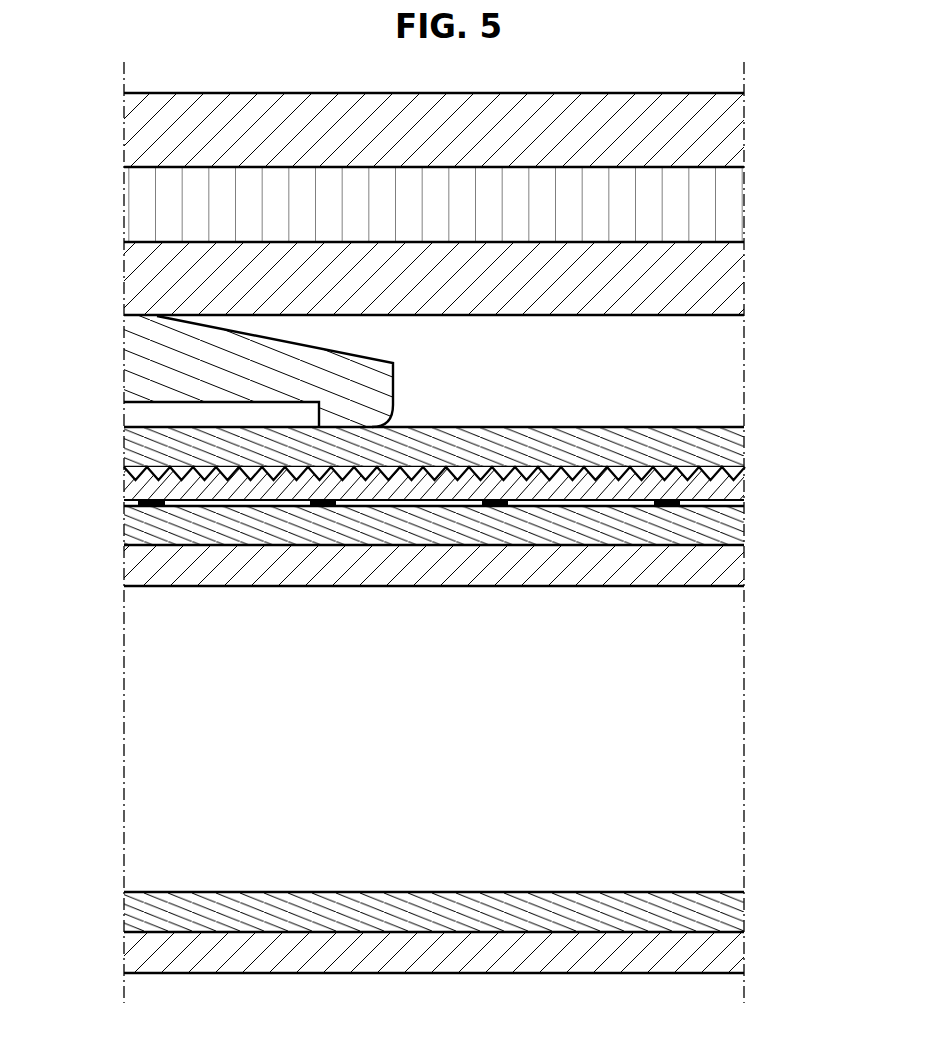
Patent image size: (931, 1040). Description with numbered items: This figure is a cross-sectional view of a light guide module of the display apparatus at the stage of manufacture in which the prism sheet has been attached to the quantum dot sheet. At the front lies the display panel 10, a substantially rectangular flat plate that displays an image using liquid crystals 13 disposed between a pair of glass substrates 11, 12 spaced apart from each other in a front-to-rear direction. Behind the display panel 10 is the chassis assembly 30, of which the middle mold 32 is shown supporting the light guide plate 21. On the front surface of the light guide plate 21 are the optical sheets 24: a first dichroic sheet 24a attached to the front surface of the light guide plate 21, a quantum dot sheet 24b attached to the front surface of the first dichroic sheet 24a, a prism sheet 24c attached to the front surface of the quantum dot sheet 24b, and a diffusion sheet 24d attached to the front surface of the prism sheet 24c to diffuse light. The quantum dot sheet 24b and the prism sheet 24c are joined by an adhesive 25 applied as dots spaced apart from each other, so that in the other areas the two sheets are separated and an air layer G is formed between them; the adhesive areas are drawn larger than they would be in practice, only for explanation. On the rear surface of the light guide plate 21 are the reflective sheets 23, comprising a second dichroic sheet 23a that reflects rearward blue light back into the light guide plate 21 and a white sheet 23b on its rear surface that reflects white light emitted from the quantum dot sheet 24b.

The display panel 10 is at (492, 204).
The glass substrate 11 is at (733, 140).
The glass substrate 12 is at (472, 278).
The liquid crystals 13 is at (726, 207).
The light guide plate 21 is at (728, 750).
The reflective sheets 23 is at (502, 935).
The second dichroic sheet 23a is at (730, 957).
The white sheet 23b is at (730, 914).
The optical sheets 24 is at (468, 508).
The first dichroic sheet 24a is at (478, 567).
The quantum dot sheet 24b is at (727, 526).
The prism sheet 24c is at (727, 491).
The diffusion sheet 24d is at (727, 447).
The adhesive 25 is at (328, 507).
The chassis assembly 30 is at (204, 371).
The middle mold 32 is at (145, 357).
The air layer G is at (203, 503).